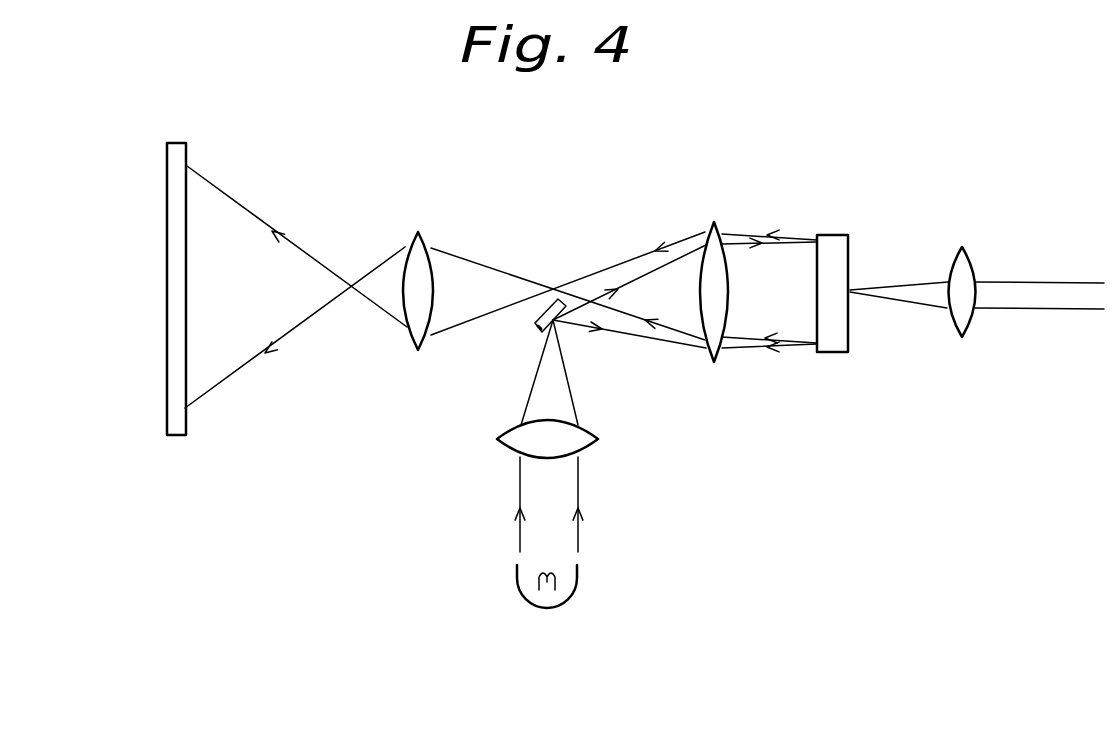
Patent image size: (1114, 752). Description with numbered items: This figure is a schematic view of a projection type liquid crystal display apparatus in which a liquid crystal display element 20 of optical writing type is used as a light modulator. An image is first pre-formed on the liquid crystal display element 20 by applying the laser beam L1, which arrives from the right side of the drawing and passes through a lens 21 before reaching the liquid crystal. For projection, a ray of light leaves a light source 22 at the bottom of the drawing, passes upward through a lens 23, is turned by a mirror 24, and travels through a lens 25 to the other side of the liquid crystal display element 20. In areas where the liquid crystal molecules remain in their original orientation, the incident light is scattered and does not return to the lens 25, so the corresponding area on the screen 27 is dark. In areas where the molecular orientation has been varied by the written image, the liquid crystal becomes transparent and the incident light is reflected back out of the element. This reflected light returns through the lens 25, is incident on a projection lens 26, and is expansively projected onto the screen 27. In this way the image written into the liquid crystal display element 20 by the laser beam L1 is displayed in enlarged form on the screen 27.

The liquid crystal display element of optical writing type 20 is at (850, 241).
The lens 21 is at (965, 266).
The light source 22 is at (579, 578).
The lens 23 is at (590, 438).
The mirror 24 is at (534, 327).
The lens 25 is at (716, 229).
The projection lens 26 is at (423, 236).
The screen 27 is at (186, 155).
The laser beam L1 is at (1069, 280).